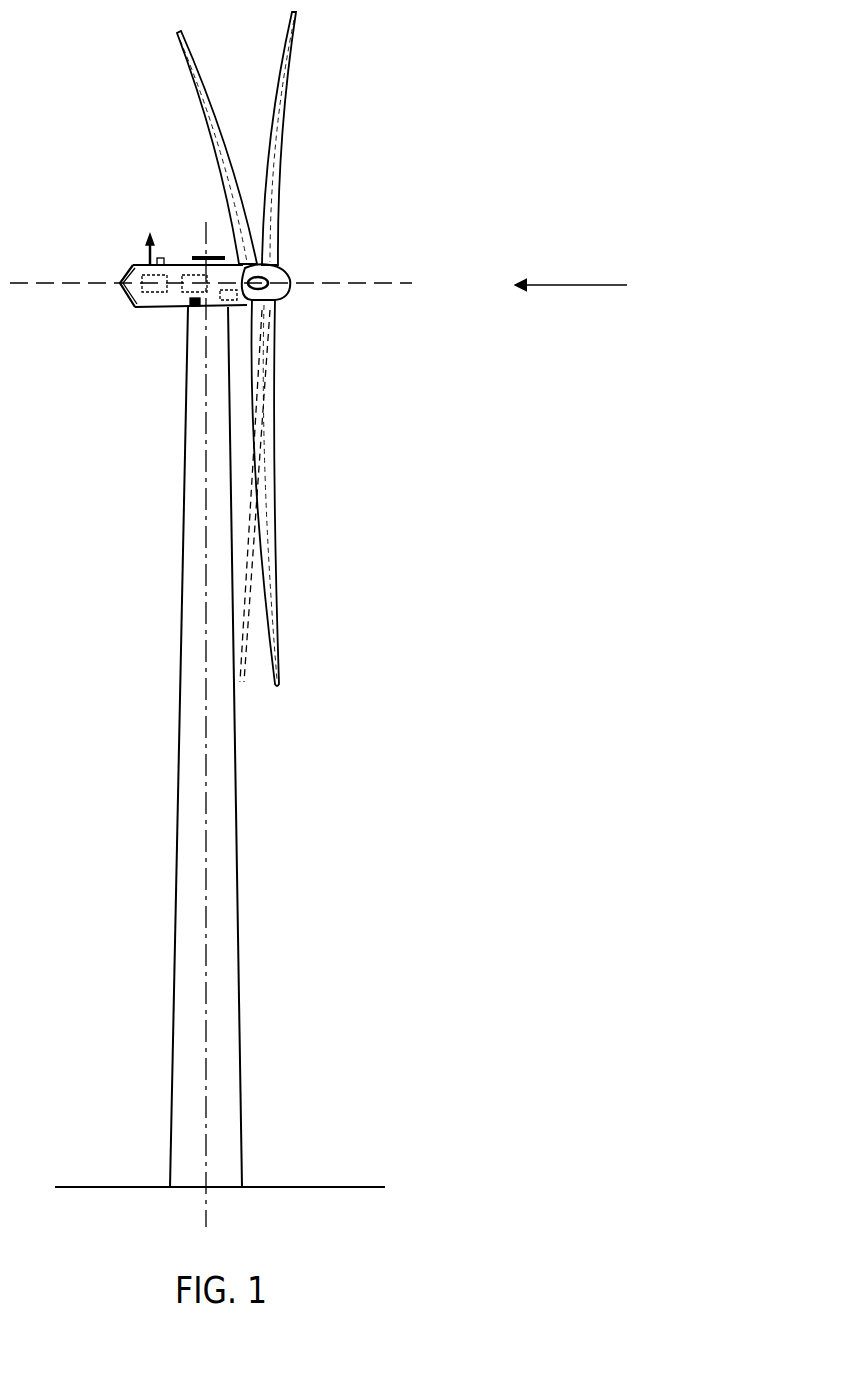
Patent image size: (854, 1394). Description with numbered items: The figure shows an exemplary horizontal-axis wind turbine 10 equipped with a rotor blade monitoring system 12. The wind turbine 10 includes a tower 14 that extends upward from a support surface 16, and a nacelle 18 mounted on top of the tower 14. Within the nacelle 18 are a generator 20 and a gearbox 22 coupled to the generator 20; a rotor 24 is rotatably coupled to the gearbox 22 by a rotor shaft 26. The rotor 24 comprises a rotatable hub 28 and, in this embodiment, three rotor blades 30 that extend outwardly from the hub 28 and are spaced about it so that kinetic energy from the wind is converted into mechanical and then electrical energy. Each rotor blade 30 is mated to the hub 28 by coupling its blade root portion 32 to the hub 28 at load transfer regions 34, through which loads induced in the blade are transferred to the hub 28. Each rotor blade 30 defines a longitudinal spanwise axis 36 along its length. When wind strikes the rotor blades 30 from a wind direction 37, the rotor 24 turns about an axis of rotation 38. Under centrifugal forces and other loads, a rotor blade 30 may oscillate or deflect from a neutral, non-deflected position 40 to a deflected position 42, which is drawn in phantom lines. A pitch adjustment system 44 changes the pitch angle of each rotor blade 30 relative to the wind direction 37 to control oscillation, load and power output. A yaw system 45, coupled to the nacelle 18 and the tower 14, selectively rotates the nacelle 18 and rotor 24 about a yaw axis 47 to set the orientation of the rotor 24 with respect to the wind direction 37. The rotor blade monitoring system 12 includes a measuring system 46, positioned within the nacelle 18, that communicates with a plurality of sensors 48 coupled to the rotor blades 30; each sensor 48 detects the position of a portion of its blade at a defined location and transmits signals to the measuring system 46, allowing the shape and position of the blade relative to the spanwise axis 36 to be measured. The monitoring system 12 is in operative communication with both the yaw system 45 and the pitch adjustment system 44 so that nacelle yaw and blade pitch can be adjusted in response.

The wind turbine 10 is at (427, 66).
The rotor blade monitoring system 12 is at (307, 341).
The tower 14 is at (237, 866).
The support surface 16 is at (322, 1187).
The nacelle 18 is at (150, 304).
The generator 20 is at (143, 259).
The gearbox 22 is at (187, 274).
The rotor 24 is at (312, 245).
The rotor shaft 26 is at (222, 262).
The rotatable hub 28 is at (283, 278).
The rotor blade 30 is at (201, 81).
The blade root portion 32 is at (294, 315).
The load transfer region 34 is at (283, 295).
The longitudinal spanwise axis 36 is at (267, 410).
The wind direction 37 is at (583, 284).
The axis of rotation 38 is at (25, 283).
The non-deflected position 40 is at (311, 568).
The deflected position 42 is at (252, 703).
The pitch adjustment system 44 is at (262, 292).
The yaw system 45 is at (192, 306).
The measuring system 46 is at (207, 303).
The yaw axis 47 is at (207, 487).
The sensor 48 is at (297, 366).